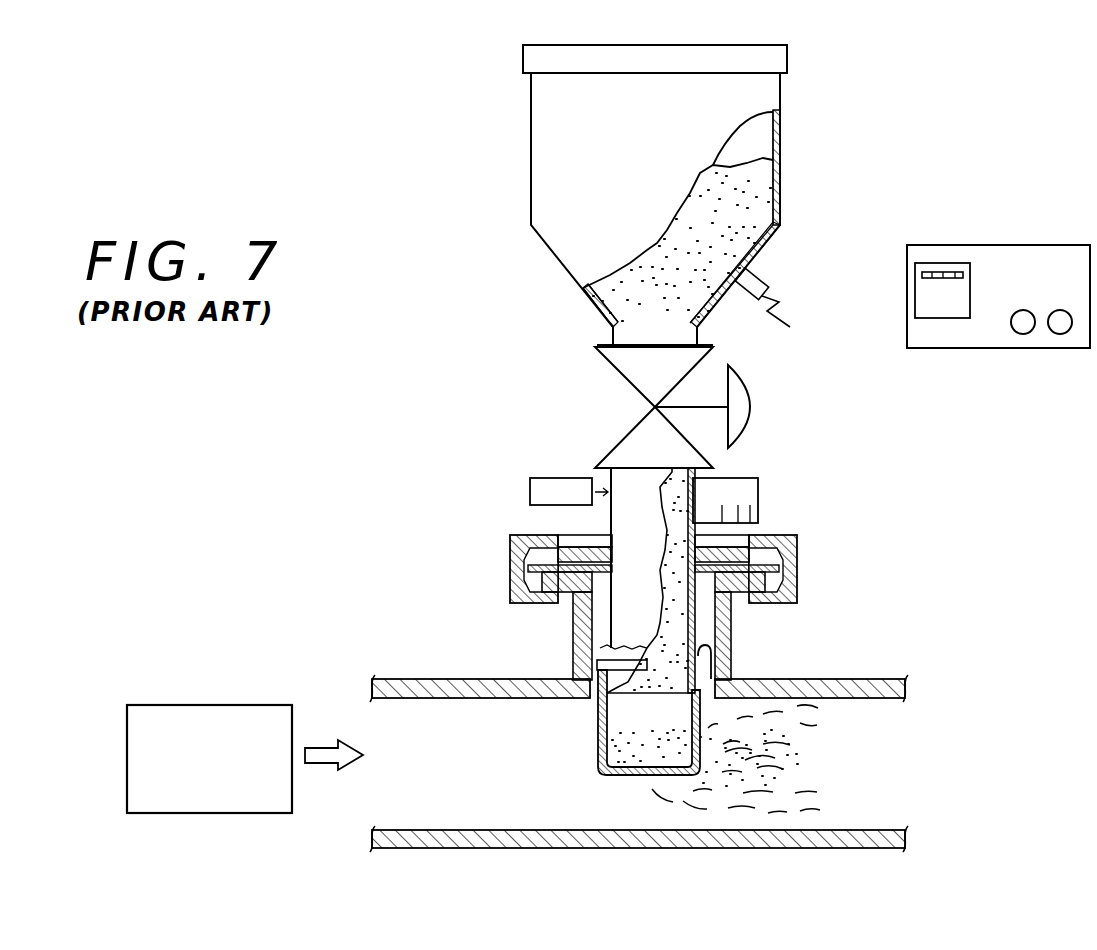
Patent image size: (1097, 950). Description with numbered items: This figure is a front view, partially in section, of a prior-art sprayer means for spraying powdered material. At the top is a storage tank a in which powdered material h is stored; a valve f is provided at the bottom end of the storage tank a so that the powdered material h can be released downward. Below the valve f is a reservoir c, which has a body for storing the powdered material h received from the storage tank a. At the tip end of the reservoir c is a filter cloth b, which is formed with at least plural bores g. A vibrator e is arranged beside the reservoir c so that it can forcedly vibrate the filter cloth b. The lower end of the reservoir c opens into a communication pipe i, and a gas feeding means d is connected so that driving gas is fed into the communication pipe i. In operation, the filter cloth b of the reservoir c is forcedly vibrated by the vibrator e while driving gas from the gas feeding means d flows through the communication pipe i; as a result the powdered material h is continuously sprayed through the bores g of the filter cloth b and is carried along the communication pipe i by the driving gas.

The storage tank a is at (782, 210).
The filter cloth b is at (613, 775).
The reservoir c is at (692, 613).
The gas feeding means d is at (220, 705).
The vibrator e is at (760, 513).
The valve f is at (750, 393).
The bores g is at (613, 743).
The powdered material h is at (762, 182).
The communication pipe i is at (828, 725).